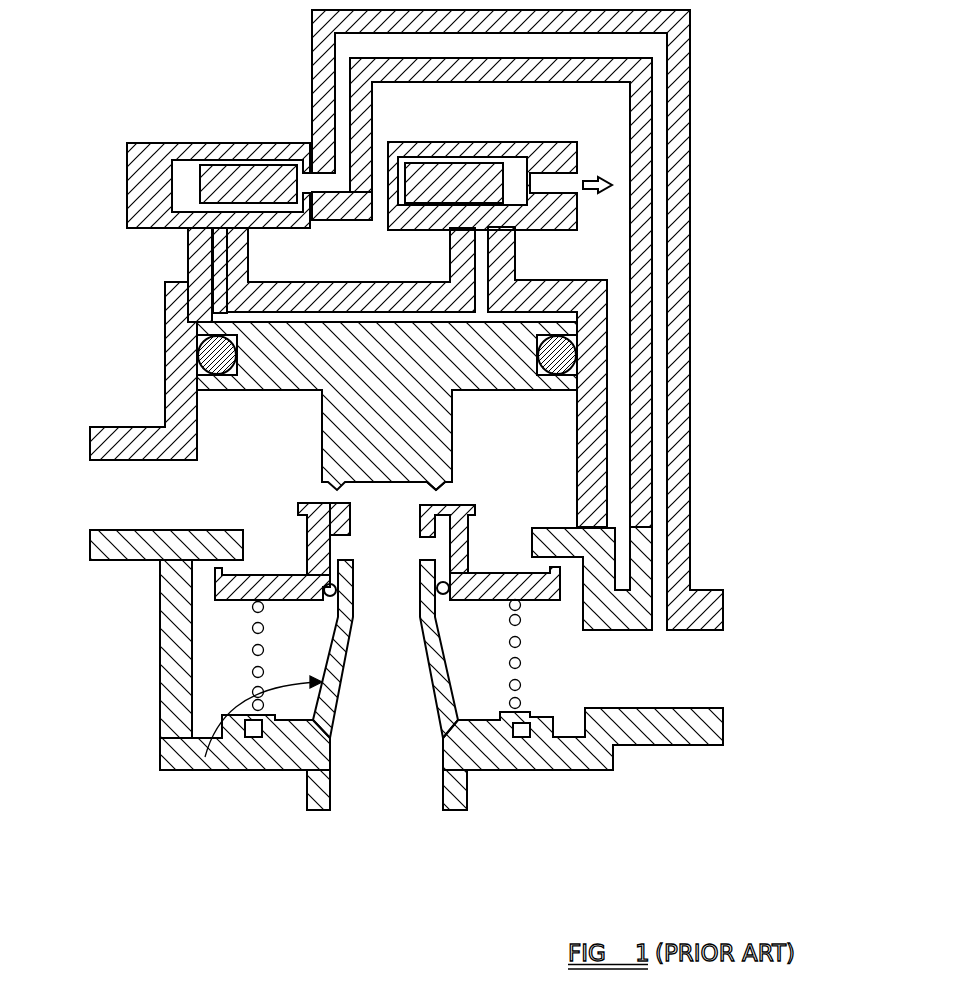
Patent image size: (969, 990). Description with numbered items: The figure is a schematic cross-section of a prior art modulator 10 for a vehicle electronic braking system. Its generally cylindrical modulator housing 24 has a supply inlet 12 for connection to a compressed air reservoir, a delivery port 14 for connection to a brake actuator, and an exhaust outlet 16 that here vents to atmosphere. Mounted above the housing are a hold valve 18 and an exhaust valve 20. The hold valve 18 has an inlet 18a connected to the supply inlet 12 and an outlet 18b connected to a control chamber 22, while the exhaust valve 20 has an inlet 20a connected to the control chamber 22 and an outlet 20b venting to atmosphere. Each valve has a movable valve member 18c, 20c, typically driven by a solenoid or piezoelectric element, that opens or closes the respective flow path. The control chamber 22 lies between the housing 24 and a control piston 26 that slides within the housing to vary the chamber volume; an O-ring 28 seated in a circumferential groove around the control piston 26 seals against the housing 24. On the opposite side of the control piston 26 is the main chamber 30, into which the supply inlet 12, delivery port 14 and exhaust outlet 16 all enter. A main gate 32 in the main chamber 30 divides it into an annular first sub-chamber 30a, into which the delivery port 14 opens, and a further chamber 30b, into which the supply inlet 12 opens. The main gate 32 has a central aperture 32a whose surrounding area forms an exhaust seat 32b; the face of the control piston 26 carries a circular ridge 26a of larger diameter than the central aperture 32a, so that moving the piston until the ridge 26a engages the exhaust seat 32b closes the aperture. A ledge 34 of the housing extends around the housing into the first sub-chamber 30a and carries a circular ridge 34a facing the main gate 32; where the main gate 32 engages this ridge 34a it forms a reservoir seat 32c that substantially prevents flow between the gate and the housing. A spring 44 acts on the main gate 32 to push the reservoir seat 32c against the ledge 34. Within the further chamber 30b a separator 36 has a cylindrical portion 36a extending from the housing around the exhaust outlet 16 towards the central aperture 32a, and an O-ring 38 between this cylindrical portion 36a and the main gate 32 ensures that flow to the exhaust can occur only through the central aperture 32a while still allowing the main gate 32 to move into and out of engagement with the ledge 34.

The modulator 10 is at (518, 792).
The supply inlet 12 is at (710, 708).
The delivery port 14 is at (157, 562).
The exhaust outlet 16 is at (443, 782).
The hold valve 18 is at (190, 230).
The inlet 18a is at (313, 182).
The outlet 18b is at (188, 252).
The valve member 18c is at (240, 168).
The exhaust valve 20 is at (502, 143).
The inlet 20a is at (487, 232).
The outlet 20b is at (583, 180).
The valve member 20c is at (443, 177).
The control chamber 22 is at (205, 320).
The modulator housing 24 is at (315, 287).
The control piston 26 is at (267, 383).
The ridge 26a is at (440, 495).
The O-ring 28 is at (197, 363).
The main chamber 30 is at (200, 493).
The first sub-chamber 30a is at (218, 440).
The further chamber 30b is at (200, 716).
The main gate 32 is at (240, 597).
The central aperture 32a is at (367, 510).
The exhaust seat 32b is at (447, 495).
The reservoir seat 32c is at (560, 578).
The ledge 34 is at (233, 590).
The ridge 34a is at (587, 567).
The separator 36 is at (205, 757).
The cylindrical portion 36a is at (292, 760).
The O-ring 38 is at (443, 597).
The spring 44 is at (250, 650).